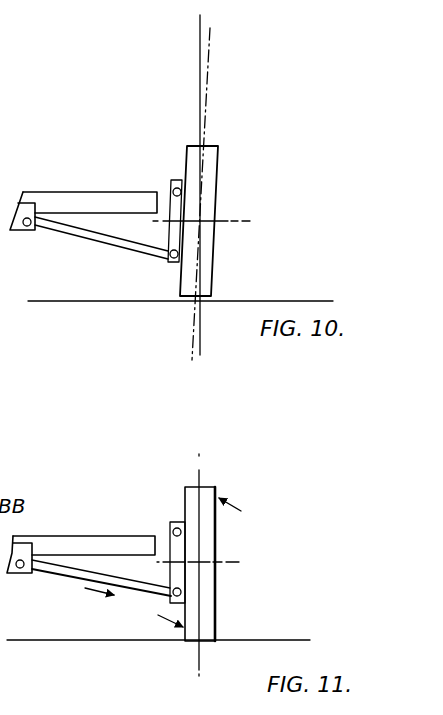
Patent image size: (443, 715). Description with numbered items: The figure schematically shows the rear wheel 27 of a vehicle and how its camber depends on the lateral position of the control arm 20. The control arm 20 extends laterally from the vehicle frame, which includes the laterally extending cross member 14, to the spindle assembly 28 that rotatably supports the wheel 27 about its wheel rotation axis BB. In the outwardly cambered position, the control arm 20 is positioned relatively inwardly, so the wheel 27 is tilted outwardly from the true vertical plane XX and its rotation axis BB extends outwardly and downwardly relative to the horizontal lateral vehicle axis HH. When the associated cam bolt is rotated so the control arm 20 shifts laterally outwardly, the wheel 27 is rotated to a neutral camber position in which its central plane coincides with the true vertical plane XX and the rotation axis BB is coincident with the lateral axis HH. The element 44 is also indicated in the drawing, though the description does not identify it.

In FIG. 10, the cross member 14 is at (111, 188).
In FIG. 11, the cross member 14 is at (89, 532).
In FIG. 10, the control arm 20 is at (117, 256).
In FIG. 11, the control arm 20 is at (46, 577).
In FIG. 10, the rear wheel 27 is at (224, 159).
In FIG. 11, the rear wheel 27 is at (219, 531).
In FIG. 10, the spindle assembly 28 is at (168, 190).
In FIG. 11, the spindle assembly 28 is at (166, 542).
In FIG. 10, the axis line 44 is at (206, 40).
In FIG. 11, the axis line 44 is at (199, 473).
In FIG. 10, the true vertical plane XX is at (199, 44).
In FIG. 11, the true vertical plane XX is at (198, 473).
In FIG. 10, the horizontal lateral axis HH is at (235, 220).
In FIG. 11, the horizontal lateral axis HH is at (222, 566).
In FIG. 10, the wheel rotation axis BB is at (235, 224).